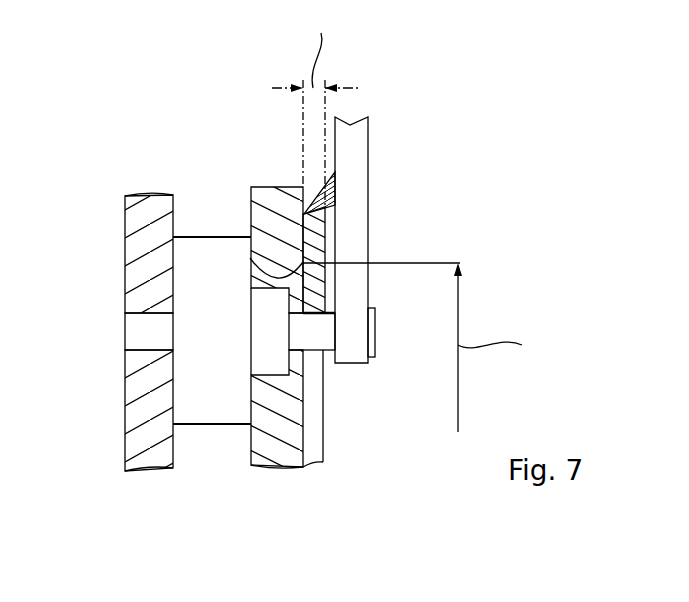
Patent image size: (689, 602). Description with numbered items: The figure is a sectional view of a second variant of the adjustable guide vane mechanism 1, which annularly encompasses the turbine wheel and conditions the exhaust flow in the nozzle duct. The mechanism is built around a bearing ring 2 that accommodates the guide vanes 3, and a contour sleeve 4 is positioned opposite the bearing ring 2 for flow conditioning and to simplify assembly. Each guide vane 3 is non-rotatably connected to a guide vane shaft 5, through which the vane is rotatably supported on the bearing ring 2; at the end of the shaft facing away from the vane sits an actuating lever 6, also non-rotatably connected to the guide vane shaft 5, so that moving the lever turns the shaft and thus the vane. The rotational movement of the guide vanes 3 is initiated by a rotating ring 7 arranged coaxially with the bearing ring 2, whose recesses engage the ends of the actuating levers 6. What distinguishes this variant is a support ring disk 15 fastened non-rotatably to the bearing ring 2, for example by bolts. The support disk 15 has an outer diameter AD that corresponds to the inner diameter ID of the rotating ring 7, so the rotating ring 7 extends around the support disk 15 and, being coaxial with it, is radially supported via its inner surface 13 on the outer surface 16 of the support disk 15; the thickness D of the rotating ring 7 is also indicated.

The adjustable guide vane mechanism 1 is at (530, 208).
The bearing ring 2 is at (281, 200).
The guide vane 3 is at (222, 339).
The contour sleeve 4 is at (133, 265).
The guide vane shaft 5 is at (314, 333).
The actuating lever 6 is at (355, 142).
The rotating ring 7 is at (346, 190).
The inner surface 13 is at (250, 243).
The support ring disk 15 is at (338, 290).
The outer surface 16 is at (318, 241).